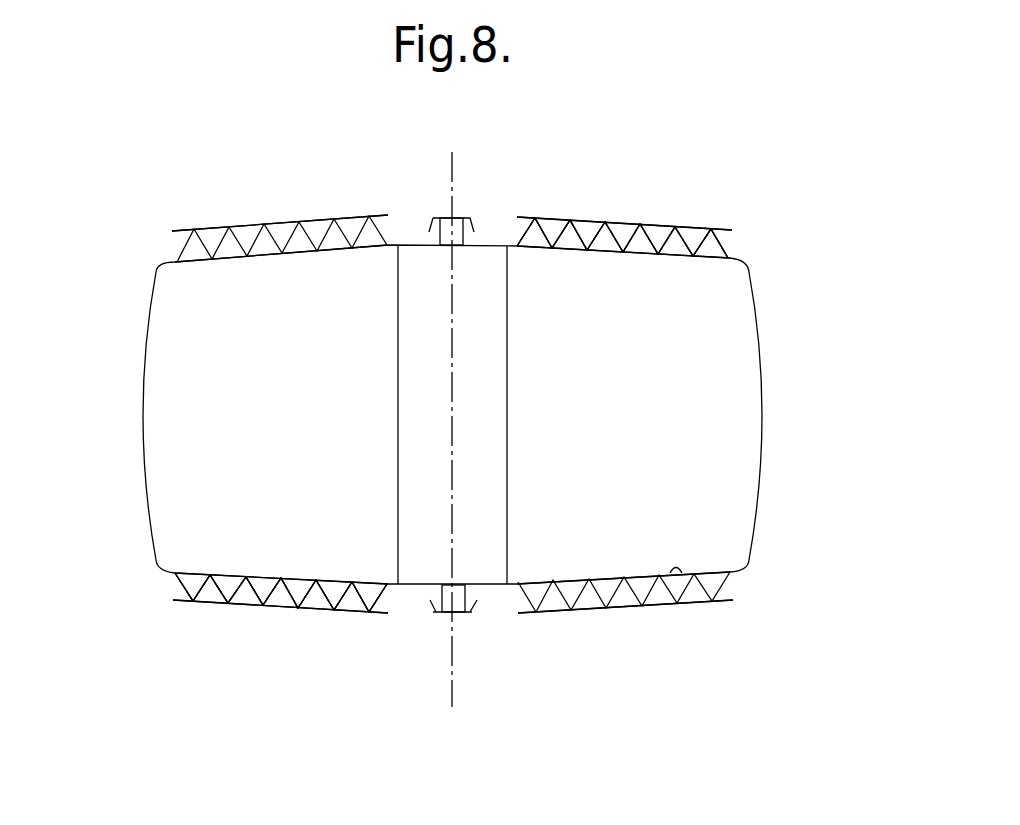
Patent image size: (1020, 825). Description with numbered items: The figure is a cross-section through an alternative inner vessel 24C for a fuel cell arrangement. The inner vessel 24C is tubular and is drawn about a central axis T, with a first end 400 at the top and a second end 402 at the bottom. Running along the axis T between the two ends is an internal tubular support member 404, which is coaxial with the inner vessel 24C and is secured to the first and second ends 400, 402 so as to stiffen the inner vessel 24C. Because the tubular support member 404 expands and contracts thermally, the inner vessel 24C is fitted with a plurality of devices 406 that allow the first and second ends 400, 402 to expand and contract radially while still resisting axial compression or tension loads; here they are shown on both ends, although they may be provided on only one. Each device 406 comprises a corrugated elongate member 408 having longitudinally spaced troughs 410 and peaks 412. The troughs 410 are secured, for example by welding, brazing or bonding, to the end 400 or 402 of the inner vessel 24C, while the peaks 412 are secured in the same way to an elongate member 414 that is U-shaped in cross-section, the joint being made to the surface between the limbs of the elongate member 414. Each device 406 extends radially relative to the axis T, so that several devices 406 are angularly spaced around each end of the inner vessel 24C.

The first end 400 is at (660, 217).
The second end 402 is at (603, 583).
The tubular support member 404 is at (508, 445).
The device 406 is at (247, 217).
The corrugated elongate member 408 is at (450, 250).
The troughs 410 is at (553, 225).
The peaks 412 is at (640, 232).
The elongate member 414 is at (440, 217).
The inner vessel 24C is at (680, 572).
The axis T is at (452, 140).